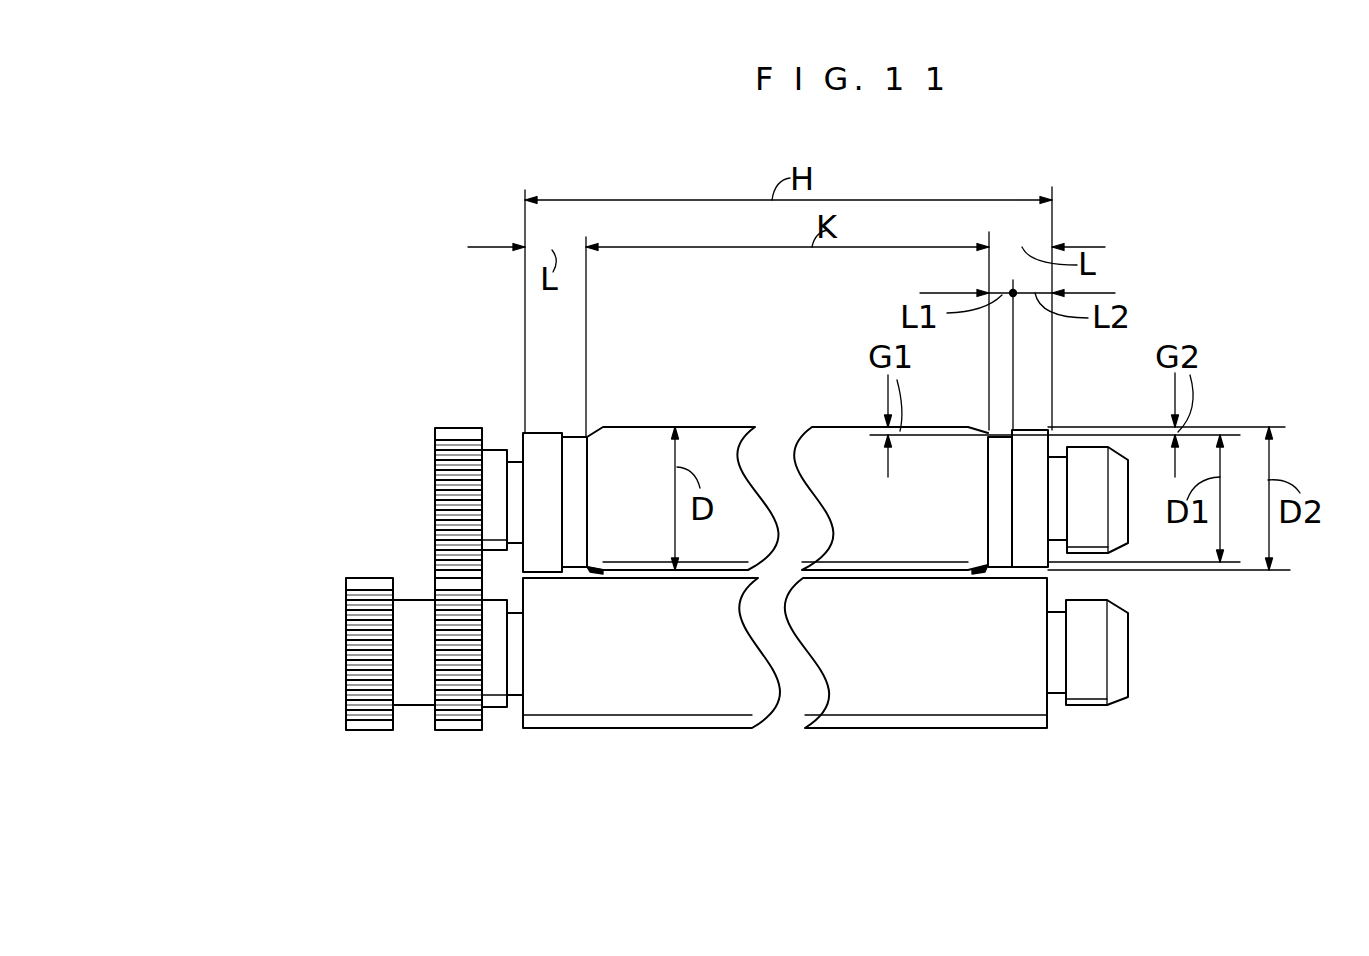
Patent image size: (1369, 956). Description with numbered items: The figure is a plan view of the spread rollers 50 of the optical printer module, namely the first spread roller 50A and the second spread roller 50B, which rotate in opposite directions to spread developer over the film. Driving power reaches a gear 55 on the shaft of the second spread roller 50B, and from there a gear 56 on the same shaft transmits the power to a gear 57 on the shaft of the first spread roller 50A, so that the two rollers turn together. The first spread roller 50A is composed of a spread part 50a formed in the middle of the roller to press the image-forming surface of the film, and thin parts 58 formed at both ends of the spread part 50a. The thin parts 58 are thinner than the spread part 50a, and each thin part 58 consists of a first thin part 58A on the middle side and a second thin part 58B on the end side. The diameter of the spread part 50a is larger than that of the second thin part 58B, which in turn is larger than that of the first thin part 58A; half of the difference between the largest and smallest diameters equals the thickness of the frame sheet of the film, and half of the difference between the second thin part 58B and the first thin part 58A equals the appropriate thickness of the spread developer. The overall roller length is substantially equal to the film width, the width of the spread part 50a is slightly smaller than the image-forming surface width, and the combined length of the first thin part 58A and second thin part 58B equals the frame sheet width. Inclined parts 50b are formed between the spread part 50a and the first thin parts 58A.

The spread rollers 50 is at (255, 510).
The first spread roller 50A is at (433, 517).
The second spread roller 50B is at (343, 637).
The spread part 50a is at (730, 440).
The inclined parts 50b is at (590, 572).
The gear 55 is at (368, 717).
The gear 56 is at (455, 722).
The gear 57 is at (463, 440).
The thin parts 58 is at (735, 772).
The first thin part 58A is at (570, 555).
The second thin part 58B is at (540, 555).